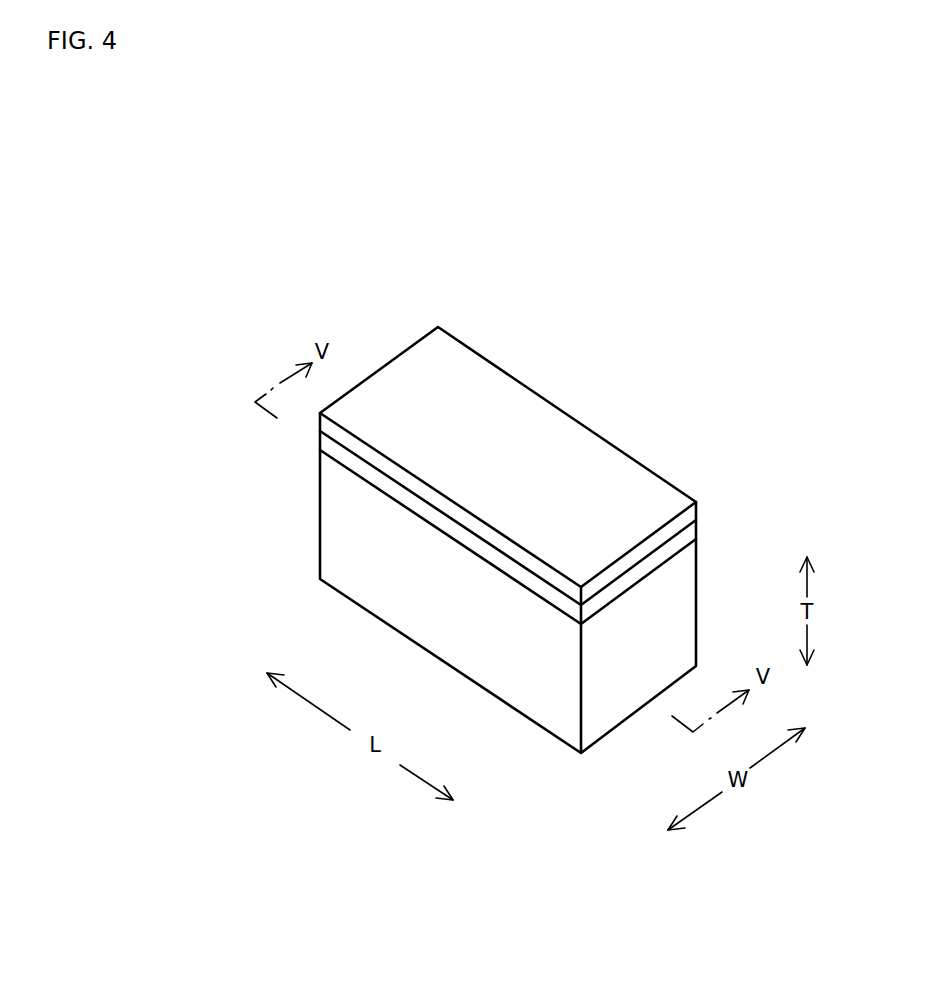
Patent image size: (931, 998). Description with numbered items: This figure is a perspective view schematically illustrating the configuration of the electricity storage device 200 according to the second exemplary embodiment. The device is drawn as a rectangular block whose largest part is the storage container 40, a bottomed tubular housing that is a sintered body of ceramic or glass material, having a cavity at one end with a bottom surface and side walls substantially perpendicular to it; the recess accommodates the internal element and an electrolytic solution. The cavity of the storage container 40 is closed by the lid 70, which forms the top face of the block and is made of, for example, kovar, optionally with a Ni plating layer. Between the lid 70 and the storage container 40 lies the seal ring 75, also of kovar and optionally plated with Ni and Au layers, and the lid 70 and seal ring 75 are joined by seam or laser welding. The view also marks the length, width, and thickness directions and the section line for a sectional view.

The electricity storage device 200 is at (662, 353).
The lid 70 is at (488, 405).
The seal ring 75 is at (695, 532).
The storage container 40 is at (348, 508).